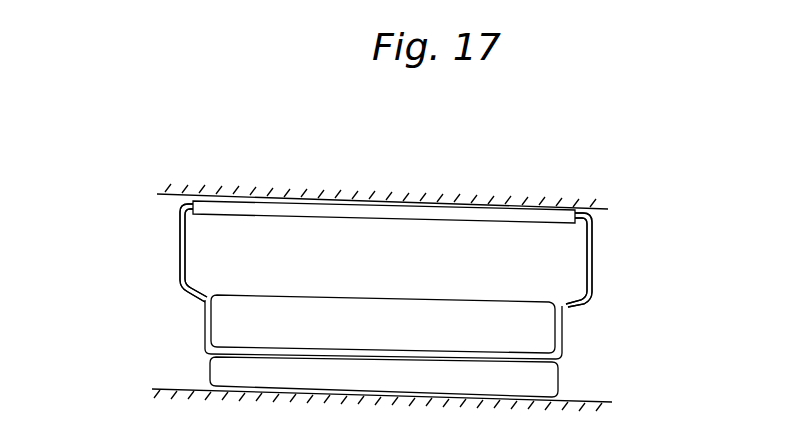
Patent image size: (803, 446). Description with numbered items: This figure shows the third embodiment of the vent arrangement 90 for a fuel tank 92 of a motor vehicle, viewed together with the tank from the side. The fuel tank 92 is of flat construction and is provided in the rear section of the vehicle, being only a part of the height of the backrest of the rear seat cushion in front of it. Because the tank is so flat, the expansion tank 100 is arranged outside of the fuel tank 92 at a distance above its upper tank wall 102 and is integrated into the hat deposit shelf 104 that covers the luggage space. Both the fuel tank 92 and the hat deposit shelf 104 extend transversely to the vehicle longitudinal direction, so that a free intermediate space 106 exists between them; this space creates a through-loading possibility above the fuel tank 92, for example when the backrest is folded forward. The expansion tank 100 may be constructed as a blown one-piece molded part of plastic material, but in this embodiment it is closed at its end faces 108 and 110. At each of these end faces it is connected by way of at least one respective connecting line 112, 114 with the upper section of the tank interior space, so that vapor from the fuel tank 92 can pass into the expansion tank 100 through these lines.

The vent arrangement 90 is at (606, 208).
The fuel tank 92 is at (571, 345).
The expansion tank 100 is at (444, 214).
The upper tank wall 102 is at (366, 297).
The hat deposit shelf 104 is at (222, 191).
The free intermediate space 106 is at (325, 243).
The end face 108 is at (584, 215).
The end face 110 is at (188, 204).
The connecting line 112 is at (593, 268).
The connecting line 114 is at (181, 261).